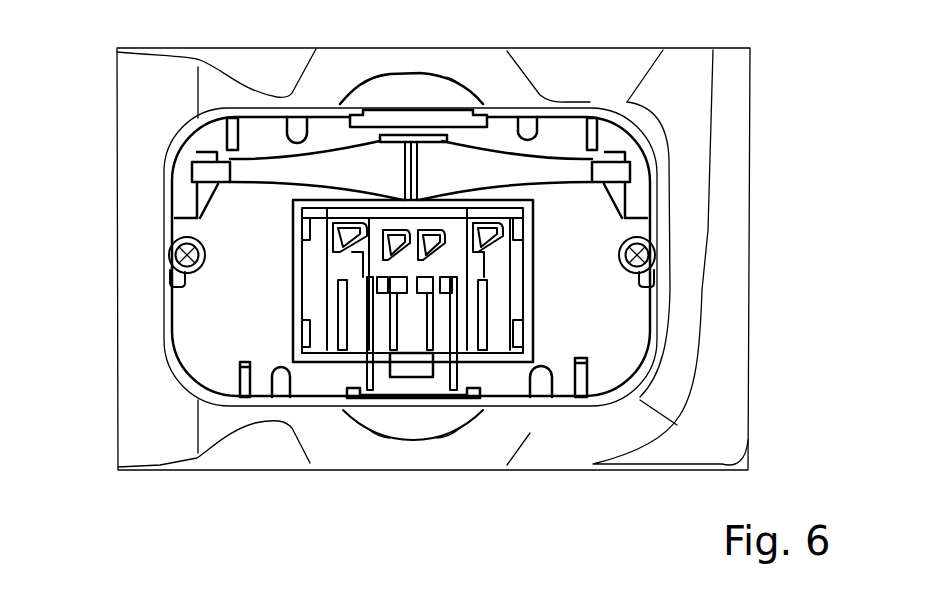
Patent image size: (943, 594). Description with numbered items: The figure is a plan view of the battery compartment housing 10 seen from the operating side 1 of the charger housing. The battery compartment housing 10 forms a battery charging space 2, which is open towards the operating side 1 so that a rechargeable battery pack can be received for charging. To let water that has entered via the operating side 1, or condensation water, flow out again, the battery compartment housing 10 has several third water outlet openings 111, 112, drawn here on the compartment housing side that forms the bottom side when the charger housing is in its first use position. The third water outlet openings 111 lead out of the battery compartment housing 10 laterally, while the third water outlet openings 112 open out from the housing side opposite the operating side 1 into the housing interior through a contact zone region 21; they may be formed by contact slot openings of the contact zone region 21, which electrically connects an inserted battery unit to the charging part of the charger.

The operating side 1 is at (727, 132).
The battery charging space 2 is at (617, 330).
The battery compartment housing 10 is at (550, 333).
The third water outlet opening 111 is at (790, 235).
The third water outlet opening 112 is at (383, 263).
The contact zone region 21 is at (463, 370).